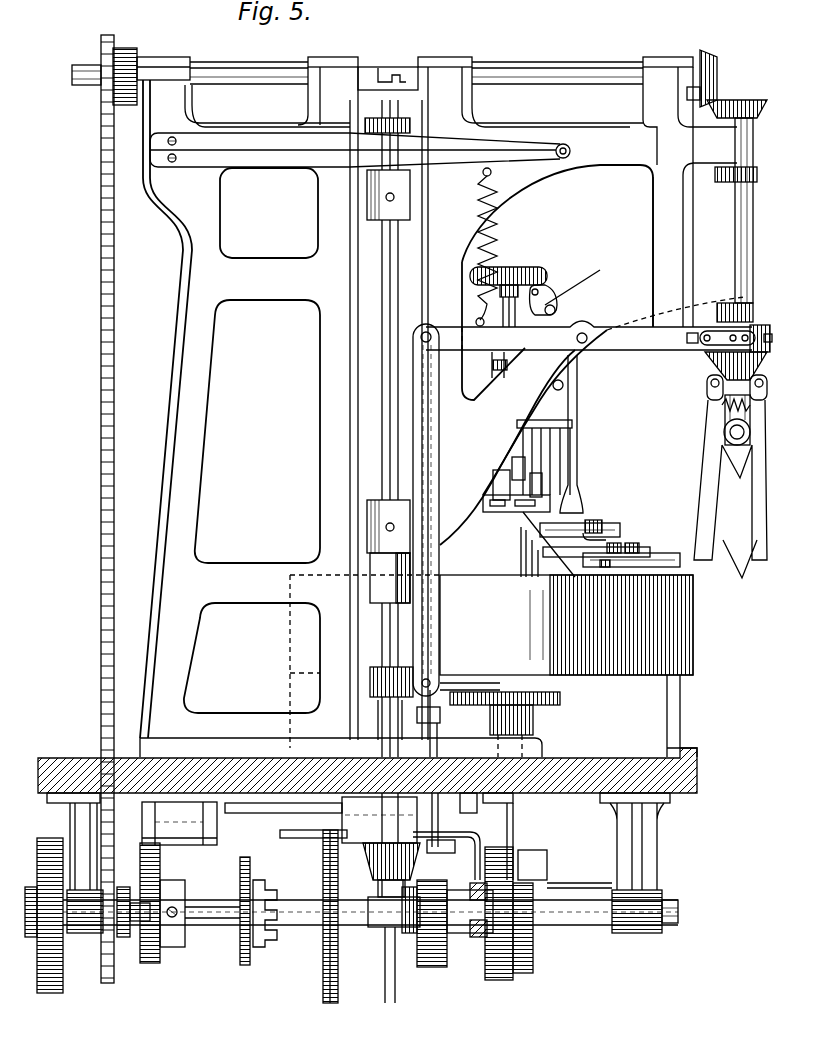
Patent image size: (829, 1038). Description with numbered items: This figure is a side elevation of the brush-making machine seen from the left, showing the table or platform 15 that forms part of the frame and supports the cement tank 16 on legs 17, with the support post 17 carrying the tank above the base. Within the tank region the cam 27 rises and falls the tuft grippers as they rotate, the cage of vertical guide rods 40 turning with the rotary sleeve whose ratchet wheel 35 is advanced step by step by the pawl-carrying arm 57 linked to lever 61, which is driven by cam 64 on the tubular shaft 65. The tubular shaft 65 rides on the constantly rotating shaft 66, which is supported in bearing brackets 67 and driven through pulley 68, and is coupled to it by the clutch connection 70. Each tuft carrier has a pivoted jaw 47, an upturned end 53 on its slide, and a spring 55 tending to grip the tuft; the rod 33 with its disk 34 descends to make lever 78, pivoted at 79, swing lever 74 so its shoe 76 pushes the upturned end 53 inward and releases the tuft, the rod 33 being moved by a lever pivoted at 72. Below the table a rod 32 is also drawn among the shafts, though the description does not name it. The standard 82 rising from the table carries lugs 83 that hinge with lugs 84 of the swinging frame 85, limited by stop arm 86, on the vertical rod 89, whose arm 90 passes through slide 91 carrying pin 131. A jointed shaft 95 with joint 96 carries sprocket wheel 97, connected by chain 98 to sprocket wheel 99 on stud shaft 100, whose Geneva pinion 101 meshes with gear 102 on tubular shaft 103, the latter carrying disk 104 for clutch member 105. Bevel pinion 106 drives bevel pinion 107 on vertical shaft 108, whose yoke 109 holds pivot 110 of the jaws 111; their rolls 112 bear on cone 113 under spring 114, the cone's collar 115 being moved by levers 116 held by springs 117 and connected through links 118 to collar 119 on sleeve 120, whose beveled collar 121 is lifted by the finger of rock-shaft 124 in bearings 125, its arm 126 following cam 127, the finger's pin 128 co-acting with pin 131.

The table or platform 15 is at (683, 776).
The cement tank 16 is at (680, 618).
The legs 17 is at (681, 692).
The cam 27 is at (592, 437).
The rod 32 is at (516, 830).
The rod 33 is at (505, 318).
The disk 34 is at (540, 266).
The ratchet wheel 35 is at (545, 713).
The vertical guide rods 40 is at (550, 444).
The jaw 47 is at (592, 532).
The upturned end 53 is at (535, 475).
The spring 55 is at (592, 519).
The arm 57 is at (472, 688).
The lever 61 is at (438, 724).
The cam 64 is at (426, 962).
The tubular shaft 65 is at (562, 897).
The shaft 66 is at (672, 905).
The bearing brackets 67 is at (86, 930).
The pulley 68 is at (338, 982).
The clutch connection 70 is at (397, 930).
The pivot 72 is at (536, 872).
The lever 74 is at (578, 405).
The wear-plate or shoe 76 is at (528, 947).
The lever 78 is at (547, 296).
The pivot 79 is at (553, 307).
The standard 82 is at (190, 418).
The lugs 83 is at (386, 125).
The lugs 84 is at (365, 208).
The swinging frame 85 is at (580, 180).
The stop arm 86 is at (548, 160).
The vertical rod 89 is at (390, 312).
The arm 90 is at (461, 928).
The slide 91 is at (478, 940).
The jointed shaft 95 is at (236, 70).
The joint or hinge 96 is at (388, 63).
The sprocket wheel 97 is at (120, 46).
The chain 98 is at (101, 333).
The sprocket wheel 99 is at (117, 962).
The stud shaft 100 is at (144, 920).
The pinion 101 is at (45, 878).
The gear 102 is at (58, 992).
The tubular shaft 103 is at (205, 922).
The disk 104 is at (240, 965).
The clutch member 105 is at (280, 940).
The bevel pinion 106 is at (718, 62).
The bevel pinion 107 is at (757, 101).
The vertical shaft 108 is at (753, 205).
The yoke 109 is at (752, 422).
The pivot 110 is at (746, 436).
The jaws 111 is at (738, 562).
The rolls 112 is at (764, 377).
The cone 113 is at (712, 352).
The spring 114 is at (757, 407).
The collar 115 is at (765, 325).
The levers 116 is at (650, 345).
The springs 117 is at (497, 250).
The links 118 is at (440, 441).
The collar 119 is at (408, 675).
The sleeve 120 is at (385, 705).
The collar 121 is at (378, 853).
The rock-shaft 124 is at (307, 838).
The bearings 125 is at (215, 840).
The arm 126 is at (183, 833).
The cam 127 is at (158, 864).
The pin 128 is at (438, 848).
The pin 131 is at (470, 836).